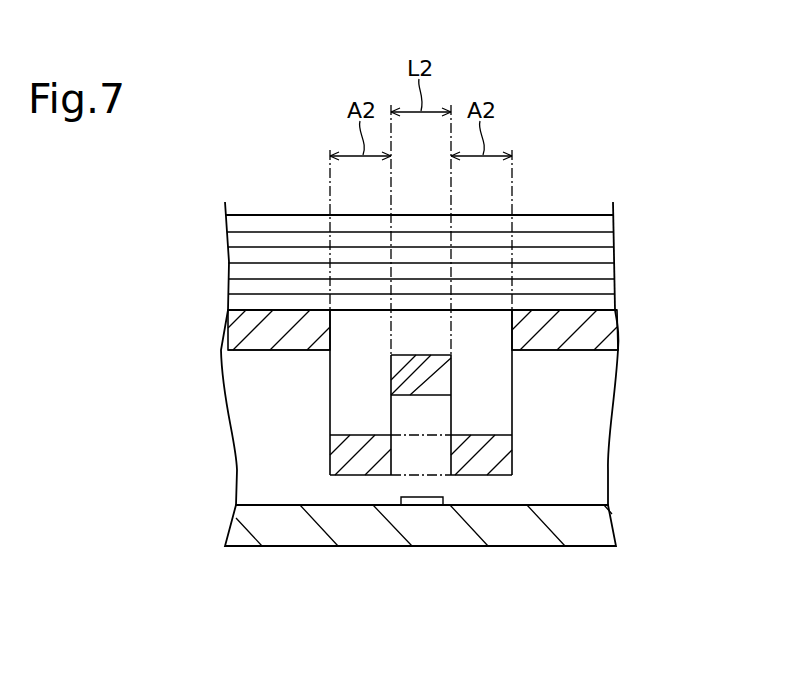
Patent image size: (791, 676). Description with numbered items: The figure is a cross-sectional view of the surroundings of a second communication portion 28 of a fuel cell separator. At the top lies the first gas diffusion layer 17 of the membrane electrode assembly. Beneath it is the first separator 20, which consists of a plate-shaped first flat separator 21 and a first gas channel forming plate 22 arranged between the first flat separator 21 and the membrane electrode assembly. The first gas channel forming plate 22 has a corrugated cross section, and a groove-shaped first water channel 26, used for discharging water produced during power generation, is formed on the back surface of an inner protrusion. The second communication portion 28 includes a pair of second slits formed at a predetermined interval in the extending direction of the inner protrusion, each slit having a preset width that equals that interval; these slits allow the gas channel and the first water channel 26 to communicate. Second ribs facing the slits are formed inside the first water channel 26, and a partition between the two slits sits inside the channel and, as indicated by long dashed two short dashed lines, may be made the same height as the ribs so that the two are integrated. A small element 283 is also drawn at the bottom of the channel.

The first gas diffusion layer 17 is at (604, 256).
The second communication portion 28 is at (519, 308).
The small projection 283 is at (417, 506).
The first gas channel forming plate 22 is at (607, 343).
The first flat separator 21 is at (600, 530).
The first separator 20 is at (717, 358).
The first water channel 26 is at (281, 489).